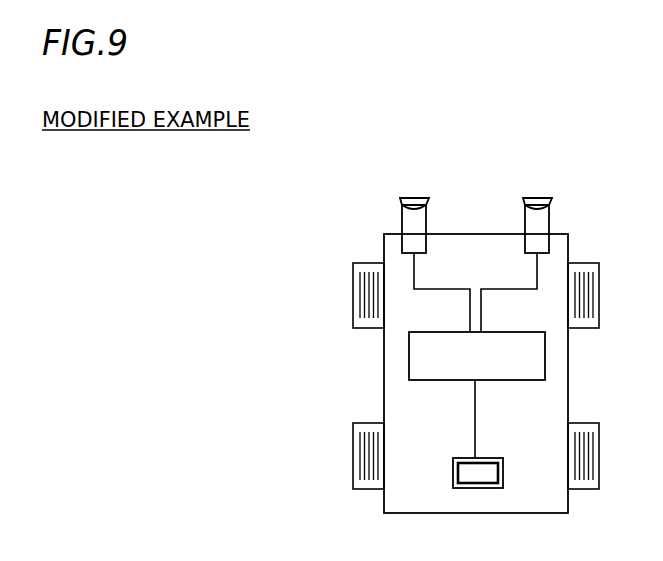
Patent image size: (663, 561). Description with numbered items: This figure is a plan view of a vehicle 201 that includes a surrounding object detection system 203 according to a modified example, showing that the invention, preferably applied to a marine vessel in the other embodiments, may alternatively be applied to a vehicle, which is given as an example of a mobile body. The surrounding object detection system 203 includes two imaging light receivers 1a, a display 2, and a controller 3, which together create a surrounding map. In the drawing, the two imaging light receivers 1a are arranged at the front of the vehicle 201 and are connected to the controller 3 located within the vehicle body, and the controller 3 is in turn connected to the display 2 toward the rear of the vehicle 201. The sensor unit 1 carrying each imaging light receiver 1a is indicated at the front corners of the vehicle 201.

The vehicle 201 is at (352, 139).
The surrounding object detection system 203 is at (396, 212).
The sensor 1 is at (543, 197).
The imaging light receiver 1a is at (412, 197).
The controller 3 is at (432, 331).
The display 2 is at (458, 456).